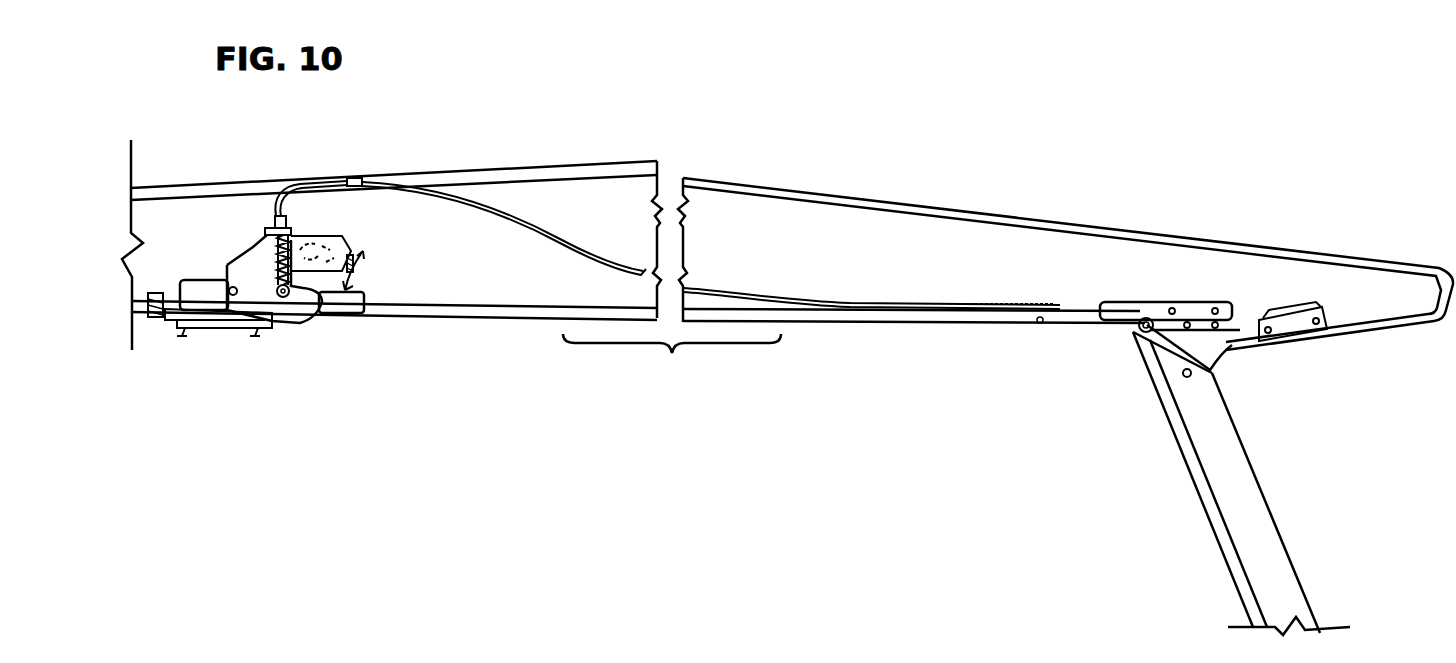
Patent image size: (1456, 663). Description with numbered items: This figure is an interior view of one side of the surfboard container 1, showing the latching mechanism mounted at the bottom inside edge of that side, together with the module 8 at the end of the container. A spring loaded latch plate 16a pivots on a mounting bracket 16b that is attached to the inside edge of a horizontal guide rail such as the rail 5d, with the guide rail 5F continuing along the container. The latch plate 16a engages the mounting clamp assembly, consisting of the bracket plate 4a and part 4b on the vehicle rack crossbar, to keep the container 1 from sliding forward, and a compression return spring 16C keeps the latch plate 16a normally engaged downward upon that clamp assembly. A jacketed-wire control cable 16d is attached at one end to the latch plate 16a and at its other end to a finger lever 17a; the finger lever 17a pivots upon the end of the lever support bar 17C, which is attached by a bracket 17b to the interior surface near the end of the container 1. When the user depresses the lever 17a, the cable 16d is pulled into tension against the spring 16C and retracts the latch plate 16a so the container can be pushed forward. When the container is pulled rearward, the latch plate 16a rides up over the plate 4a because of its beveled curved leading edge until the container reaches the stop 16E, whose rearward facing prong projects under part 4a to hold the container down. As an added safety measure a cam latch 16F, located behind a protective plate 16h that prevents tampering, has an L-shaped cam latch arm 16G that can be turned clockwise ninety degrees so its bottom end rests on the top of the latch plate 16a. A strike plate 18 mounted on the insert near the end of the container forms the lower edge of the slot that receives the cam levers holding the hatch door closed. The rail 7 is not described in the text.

The surfboard container 1 is at (692, 108).
The mounting bracket plate 4a is at (237, 336).
The mounting clamp assembly part 4b is at (200, 336).
The horizontal guide rail 5d is at (497, 311).
The horizontal guide rail 5F is at (940, 320).
The upper rail 7 is at (635, 176).
The module 8 is at (740, 200).
The latch plate 16a is at (277, 320).
The mounting bracket 16b is at (210, 287).
The return spring 16C is at (265, 236).
The control cable 16d is at (527, 214).
The stop 16E is at (153, 322).
The cam latch 16F is at (322, 252).
The cam latch arm 16G is at (357, 250).
The protective plate 16h is at (306, 232).
The finger lever 17a is at (1150, 367).
The bracket 17b is at (1193, 303).
The lever support bar 17C is at (1233, 513).
The strike plate 18 is at (1313, 332).